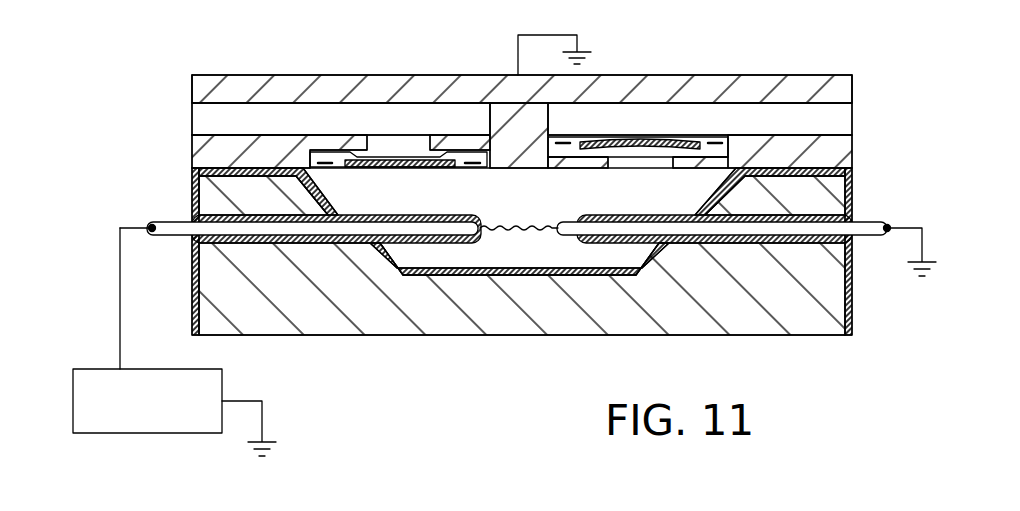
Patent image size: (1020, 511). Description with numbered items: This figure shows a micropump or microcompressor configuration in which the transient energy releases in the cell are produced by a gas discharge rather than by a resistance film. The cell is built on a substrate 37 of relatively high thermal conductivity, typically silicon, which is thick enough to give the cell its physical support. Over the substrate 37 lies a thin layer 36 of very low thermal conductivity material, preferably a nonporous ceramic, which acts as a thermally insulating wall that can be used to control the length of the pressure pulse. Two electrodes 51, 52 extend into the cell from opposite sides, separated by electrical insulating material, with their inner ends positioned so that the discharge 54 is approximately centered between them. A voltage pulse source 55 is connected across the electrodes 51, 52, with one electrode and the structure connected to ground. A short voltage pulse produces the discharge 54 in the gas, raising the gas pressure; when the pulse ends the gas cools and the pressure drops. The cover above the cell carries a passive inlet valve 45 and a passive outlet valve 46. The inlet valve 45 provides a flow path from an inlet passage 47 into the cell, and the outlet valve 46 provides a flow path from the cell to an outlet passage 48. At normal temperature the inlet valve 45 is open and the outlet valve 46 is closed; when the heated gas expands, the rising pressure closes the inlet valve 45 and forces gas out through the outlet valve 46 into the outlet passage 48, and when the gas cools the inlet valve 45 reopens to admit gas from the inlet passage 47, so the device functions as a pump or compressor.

The layer 36 is at (500, 277).
The substrate 37 is at (380, 326).
The inlet valve 45 is at (396, 160).
The outlet valve 46 is at (640, 138).
The inlet passage 47 is at (200, 103).
The outlet passage 48 is at (828, 115).
The electrode 51 is at (863, 221).
The electrode 52 is at (166, 222).
The discharge 54 is at (518, 224).
The voltage pulse source 55 is at (218, 373).